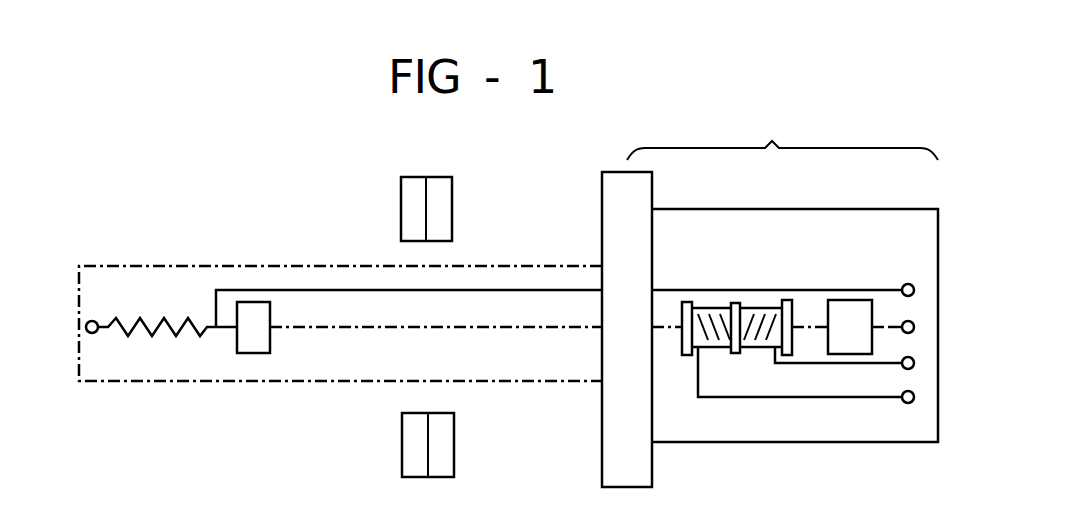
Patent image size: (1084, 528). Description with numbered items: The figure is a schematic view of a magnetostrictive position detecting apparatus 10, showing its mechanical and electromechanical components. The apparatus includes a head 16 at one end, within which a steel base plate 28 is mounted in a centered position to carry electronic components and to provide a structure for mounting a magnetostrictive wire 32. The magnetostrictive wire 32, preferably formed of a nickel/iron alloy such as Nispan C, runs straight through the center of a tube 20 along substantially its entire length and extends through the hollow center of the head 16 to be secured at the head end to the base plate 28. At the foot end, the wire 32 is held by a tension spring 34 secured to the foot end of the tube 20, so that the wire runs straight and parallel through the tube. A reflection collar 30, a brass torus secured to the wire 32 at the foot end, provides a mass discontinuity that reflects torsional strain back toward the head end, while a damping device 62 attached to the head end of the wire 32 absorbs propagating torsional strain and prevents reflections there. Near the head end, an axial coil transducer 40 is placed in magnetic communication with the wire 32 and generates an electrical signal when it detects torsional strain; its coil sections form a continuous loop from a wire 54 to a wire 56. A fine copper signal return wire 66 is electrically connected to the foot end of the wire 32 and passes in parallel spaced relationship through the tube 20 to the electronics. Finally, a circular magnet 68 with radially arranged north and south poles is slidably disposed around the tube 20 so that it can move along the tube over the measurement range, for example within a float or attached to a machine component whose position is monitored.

The magnetostrictive position detecting apparatus 10 is at (224, 201).
The head 16 is at (782, 138).
The tube 20 is at (100, 266).
The steel base plate 28 is at (792, 249).
The reflection collar 30 is at (257, 335).
The magnetostrictive wire 32 is at (390, 330).
The tension spring 34 is at (158, 320).
The axial coil transducer 40 is at (682, 302).
The wire 54 is at (820, 363).
The wire 56 is at (750, 397).
The damping device 62 is at (862, 339).
The signal return wire 66 is at (322, 290).
The circular magnet 68 is at (401, 200).